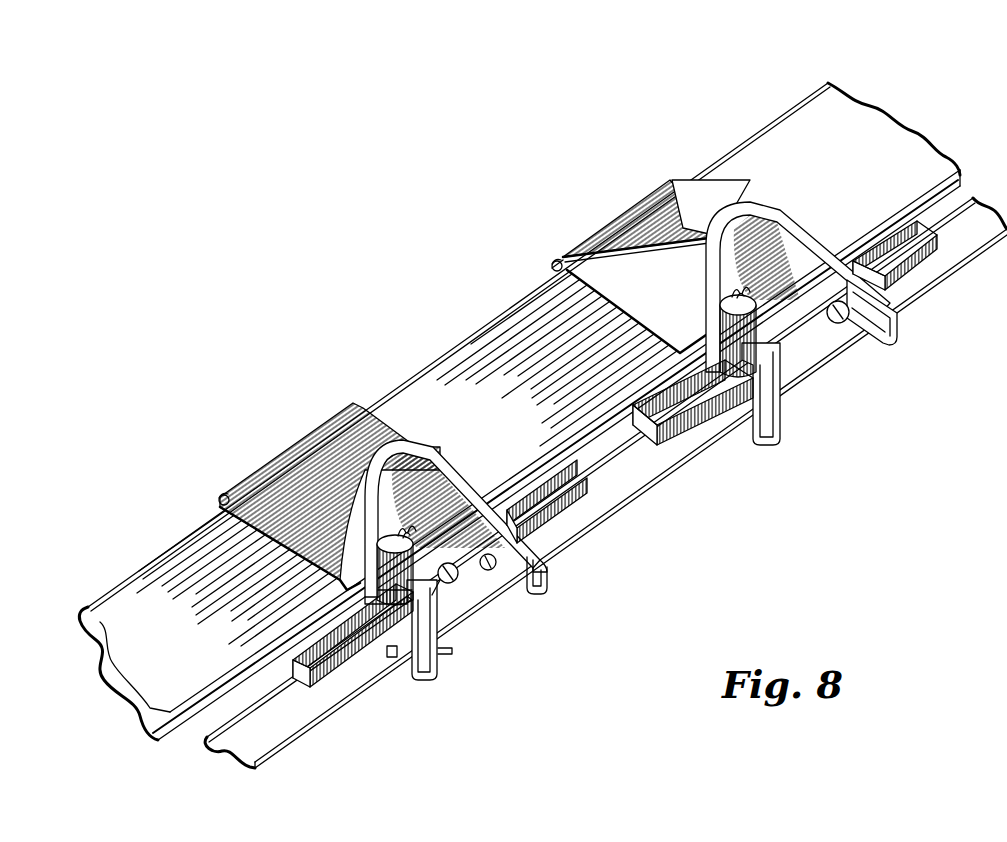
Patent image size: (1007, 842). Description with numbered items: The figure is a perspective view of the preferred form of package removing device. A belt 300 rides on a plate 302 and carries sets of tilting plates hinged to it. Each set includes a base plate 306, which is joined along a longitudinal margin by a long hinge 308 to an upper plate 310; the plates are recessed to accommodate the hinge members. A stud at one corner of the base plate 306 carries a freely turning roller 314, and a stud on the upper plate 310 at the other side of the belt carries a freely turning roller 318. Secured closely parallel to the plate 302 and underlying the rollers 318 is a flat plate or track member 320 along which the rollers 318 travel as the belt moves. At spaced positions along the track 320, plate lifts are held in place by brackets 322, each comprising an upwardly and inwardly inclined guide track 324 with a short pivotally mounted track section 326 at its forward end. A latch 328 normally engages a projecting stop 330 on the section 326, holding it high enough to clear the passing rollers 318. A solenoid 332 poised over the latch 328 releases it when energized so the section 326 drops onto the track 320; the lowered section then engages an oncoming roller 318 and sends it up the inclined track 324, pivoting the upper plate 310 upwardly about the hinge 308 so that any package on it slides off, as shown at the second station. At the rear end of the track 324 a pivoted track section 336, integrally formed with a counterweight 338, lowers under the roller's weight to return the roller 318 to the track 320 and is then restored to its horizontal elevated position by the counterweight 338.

The belt 300 is at (146, 570).
The plate 302 is at (92, 612).
The base plate 306 is at (577, 341).
The long hinge 308 is at (551, 268).
The upper plate 310 is at (320, 436).
The roller 314 is at (222, 495).
The roller 318 is at (456, 587).
The flat plate or track member 320 is at (606, 483).
The brackets 322 is at (549, 578).
The inclined guide track 324 is at (447, 468).
The pivotally mounted track section 326 is at (305, 688).
The latch 328 is at (447, 650).
The projecting stop 330 is at (391, 660).
The solenoid 332 is at (742, 294).
The pivoted track section 336 is at (578, 508).
The counterweight 338 is at (492, 575).